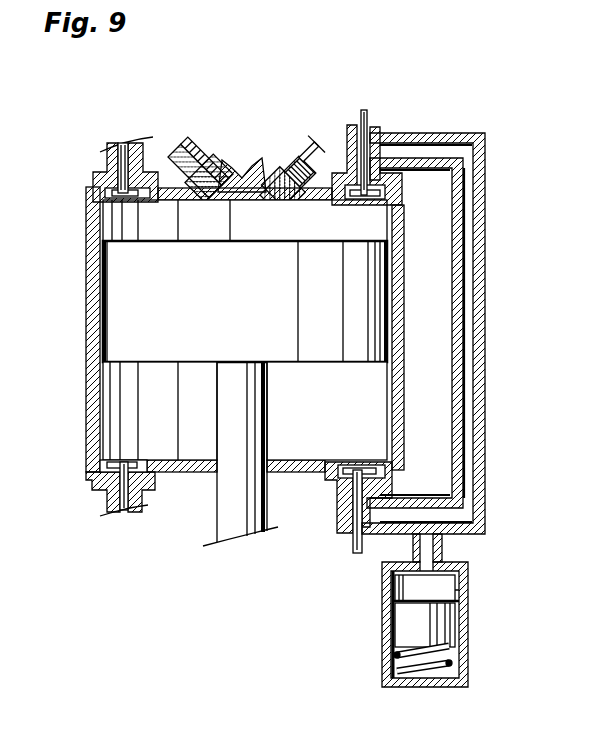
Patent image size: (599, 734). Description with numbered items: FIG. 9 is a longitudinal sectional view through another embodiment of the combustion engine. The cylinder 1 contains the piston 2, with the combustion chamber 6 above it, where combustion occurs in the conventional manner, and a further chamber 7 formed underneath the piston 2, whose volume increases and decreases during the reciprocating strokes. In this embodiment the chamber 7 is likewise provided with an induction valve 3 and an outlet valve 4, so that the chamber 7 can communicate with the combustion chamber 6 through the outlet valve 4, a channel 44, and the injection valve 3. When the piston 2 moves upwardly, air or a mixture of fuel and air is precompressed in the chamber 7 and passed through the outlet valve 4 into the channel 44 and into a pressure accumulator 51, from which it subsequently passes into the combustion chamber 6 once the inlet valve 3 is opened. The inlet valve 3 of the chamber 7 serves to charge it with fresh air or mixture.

The cylinder 1 is at (400, 260).
The piston 2 is at (286, 299).
The inlet valve 3 is at (372, 113).
The outlet valve 4 is at (120, 155).
The combustion chamber 6 is at (328, 216).
The chamber 7 is at (322, 412).
The channel 44 is at (467, 327).
The pressure accumulator 51 is at (400, 622).